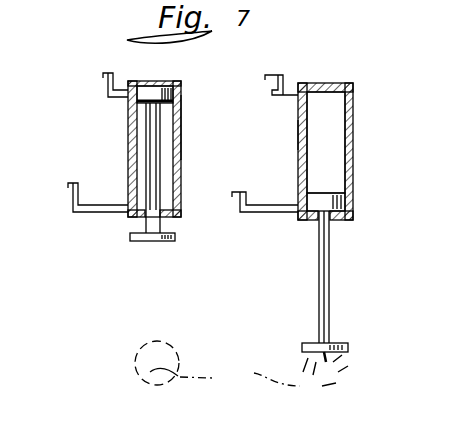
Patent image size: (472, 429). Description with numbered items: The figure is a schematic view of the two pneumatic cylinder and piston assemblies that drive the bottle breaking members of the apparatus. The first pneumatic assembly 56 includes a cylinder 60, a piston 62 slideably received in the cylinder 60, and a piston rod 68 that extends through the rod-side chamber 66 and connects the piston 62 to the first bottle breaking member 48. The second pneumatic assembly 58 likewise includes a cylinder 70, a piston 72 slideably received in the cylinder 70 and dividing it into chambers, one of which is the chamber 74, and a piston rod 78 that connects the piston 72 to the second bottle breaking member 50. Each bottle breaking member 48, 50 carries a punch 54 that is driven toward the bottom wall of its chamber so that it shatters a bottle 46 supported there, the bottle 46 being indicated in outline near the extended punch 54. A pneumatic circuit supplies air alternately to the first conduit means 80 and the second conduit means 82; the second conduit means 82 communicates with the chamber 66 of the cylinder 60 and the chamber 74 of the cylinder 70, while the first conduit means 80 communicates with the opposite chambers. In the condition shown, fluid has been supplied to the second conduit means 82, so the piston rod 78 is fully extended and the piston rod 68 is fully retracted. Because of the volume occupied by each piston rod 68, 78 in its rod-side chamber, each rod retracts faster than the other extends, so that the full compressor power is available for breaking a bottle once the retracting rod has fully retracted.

The bottle 46 is at (217, 363).
The bottle breaking member 48 is at (142, 248).
The bottle breaking member 50 is at (348, 322).
The punch 54 is at (154, 244).
The pneumatic assembly 56 is at (124, 120).
The pneumatic assembly 58 is at (366, 116).
The cylinder 60 is at (183, 126).
The piston 62 is at (178, 86).
The chamber 66 is at (146, 153).
The piston rod 68 is at (160, 222).
The cylinder 70 is at (298, 131).
The piston 72 is at (350, 203).
The chamber 74 is at (324, 140).
The piston rod 78 is at (322, 252).
The first conduit means 80 is at (108, 79).
The second conduit means 82 is at (96, 208).